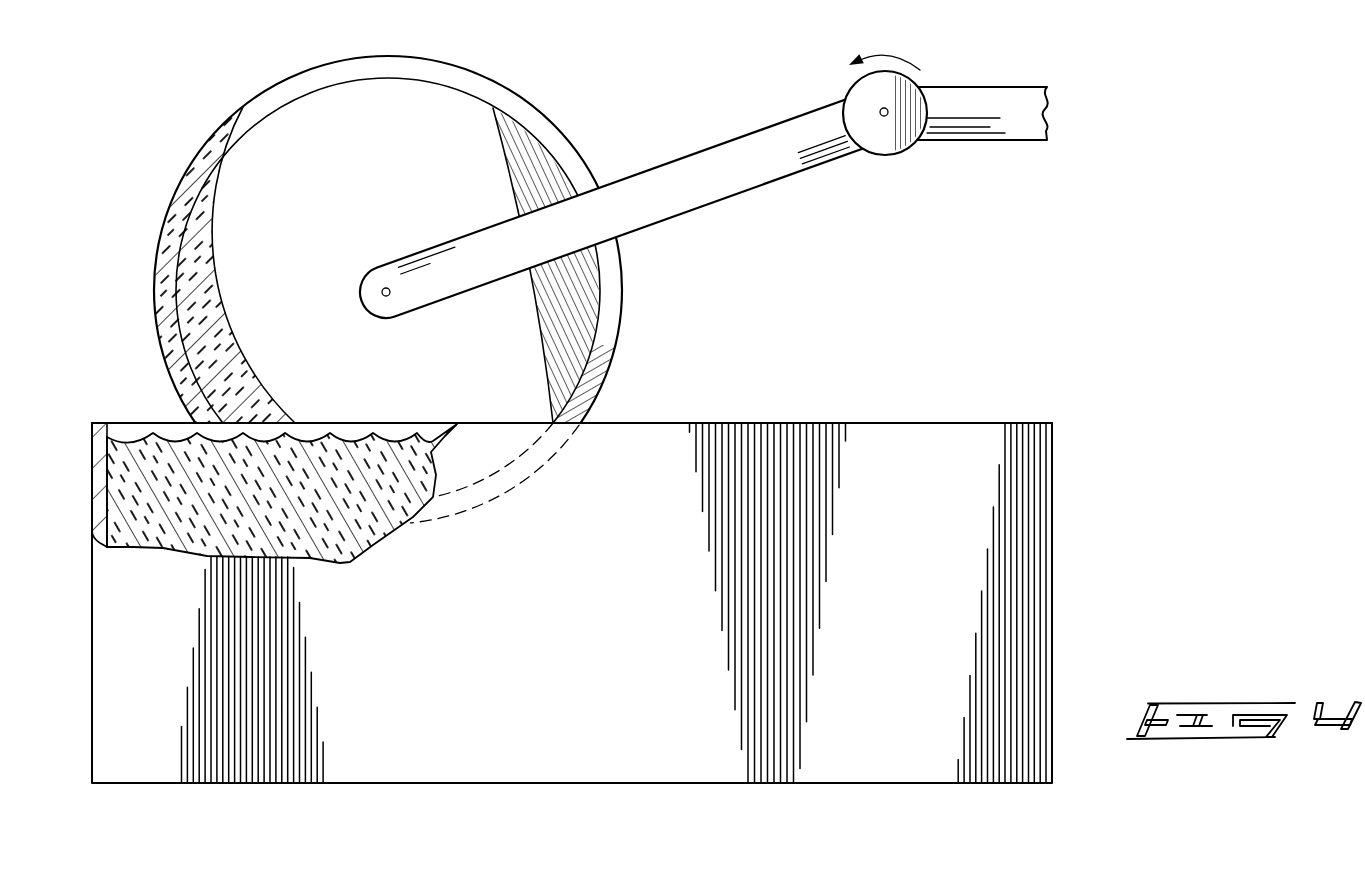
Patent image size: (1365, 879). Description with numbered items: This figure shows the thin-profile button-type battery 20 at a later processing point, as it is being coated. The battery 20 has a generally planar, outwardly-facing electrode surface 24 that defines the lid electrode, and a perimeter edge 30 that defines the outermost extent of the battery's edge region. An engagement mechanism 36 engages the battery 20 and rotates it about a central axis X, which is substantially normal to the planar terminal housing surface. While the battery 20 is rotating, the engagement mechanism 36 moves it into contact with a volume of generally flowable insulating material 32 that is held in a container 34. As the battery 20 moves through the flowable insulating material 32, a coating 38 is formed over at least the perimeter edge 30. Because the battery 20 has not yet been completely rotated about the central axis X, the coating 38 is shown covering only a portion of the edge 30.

The battery 20 is at (352, 306).
The first electrode surface 24 is at (317, 218).
The perimeter edge 30 is at (537, 112).
The flowable insulating material 32 is at (572, 552).
The container 34 is at (948, 422).
The engagement mechanism 36 is at (719, 214).
The coating 38 is at (183, 345).
The central axis X is at (389, 297).